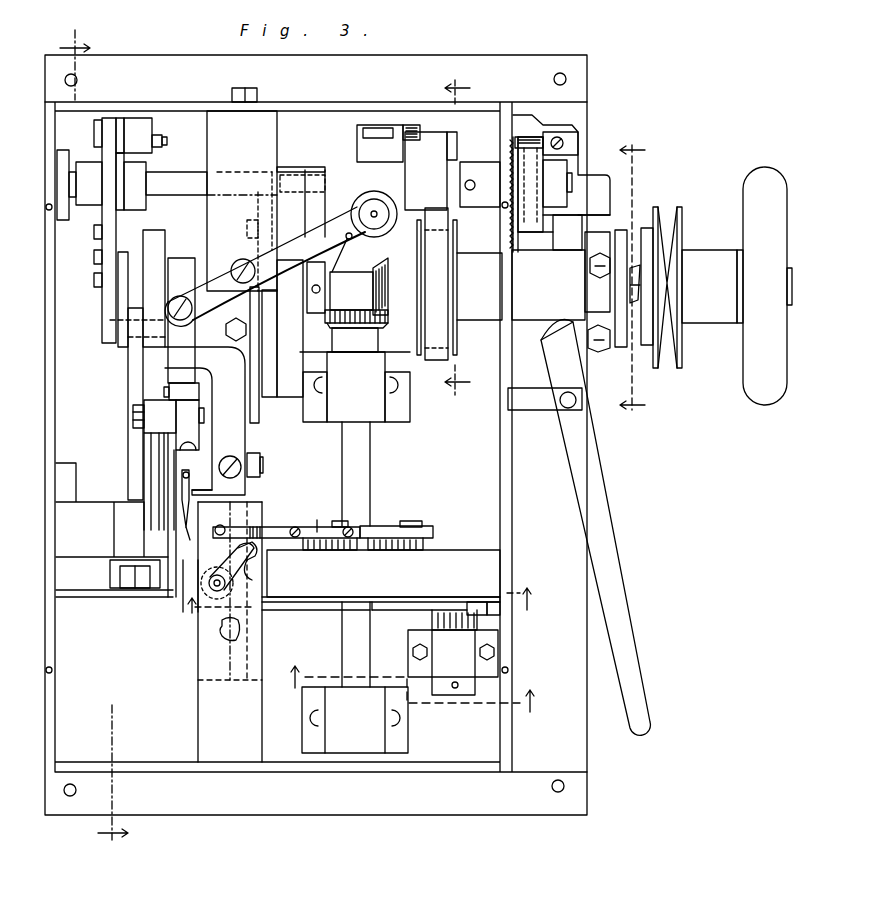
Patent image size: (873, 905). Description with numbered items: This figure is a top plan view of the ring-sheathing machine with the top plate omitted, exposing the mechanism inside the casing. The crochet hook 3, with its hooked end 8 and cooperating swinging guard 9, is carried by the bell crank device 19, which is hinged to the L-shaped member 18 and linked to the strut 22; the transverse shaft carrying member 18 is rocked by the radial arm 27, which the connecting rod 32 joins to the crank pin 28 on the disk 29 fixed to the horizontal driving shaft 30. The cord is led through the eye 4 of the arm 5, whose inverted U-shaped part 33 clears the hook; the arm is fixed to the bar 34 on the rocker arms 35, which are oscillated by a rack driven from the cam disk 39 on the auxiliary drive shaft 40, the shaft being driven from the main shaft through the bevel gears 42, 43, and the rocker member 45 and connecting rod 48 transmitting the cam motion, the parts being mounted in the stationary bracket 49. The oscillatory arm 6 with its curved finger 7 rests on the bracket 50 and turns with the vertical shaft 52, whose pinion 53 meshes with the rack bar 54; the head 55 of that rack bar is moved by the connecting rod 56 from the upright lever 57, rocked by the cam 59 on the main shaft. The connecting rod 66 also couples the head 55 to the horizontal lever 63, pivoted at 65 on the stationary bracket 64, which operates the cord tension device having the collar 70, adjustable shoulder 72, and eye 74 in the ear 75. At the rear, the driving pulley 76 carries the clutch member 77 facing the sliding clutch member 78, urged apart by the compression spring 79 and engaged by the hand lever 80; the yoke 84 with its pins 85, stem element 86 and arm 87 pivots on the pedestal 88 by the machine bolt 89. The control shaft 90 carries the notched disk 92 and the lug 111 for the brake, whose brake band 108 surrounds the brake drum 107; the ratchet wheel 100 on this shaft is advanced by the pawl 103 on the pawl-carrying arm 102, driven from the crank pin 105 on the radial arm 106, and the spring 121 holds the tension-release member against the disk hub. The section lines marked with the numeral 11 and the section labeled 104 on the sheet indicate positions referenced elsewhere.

The crochet hook 3 is at (182, 462).
The eye 4 is at (218, 528).
The arm 5 is at (286, 519).
The oscillatory arm 6 is at (253, 565).
The curved finger 7 is at (272, 557).
The hooked end 8 is at (188, 522).
The swinging guard 9 is at (188, 490).
The section line 11- 11 is at (457, 236).
The L-shaped member 18 is at (154, 474).
The bell crank device 19 is at (168, 416).
The strut 22 is at (178, 590).
The radial arm 27 is at (122, 588).
The crank pin 28 is at (120, 342).
The disk 29 is at (148, 285).
The driving shaft 30 is at (351, 291).
The connecting rod 32 is at (137, 383).
The inverted U-shaped part 33 is at (258, 528).
The bar 34 is at (385, 525).
The rocker arms 35 is at (381, 551).
The cam disk 39 is at (328, 612).
The auxiliary drive shaft 40 is at (367, 463).
The bevel gear 42 is at (348, 323).
The bevel gear 43 is at (393, 276).
The rocker member 45 is at (456, 632).
The connecting rod 48 is at (410, 607).
The stationary bracket 49 is at (383, 573).
The bracket 50 is at (205, 658).
The vertical shaft 52 is at (214, 592).
The pinion 53 is at (227, 570).
The rack bar 54 is at (243, 494).
The head 55 is at (247, 477).
The connecting rod 56 is at (307, 425).
The upright lever 57 is at (270, 315).
The cam 59 is at (290, 328).
The horizontal lever 63 is at (265, 266).
The stationary bracket 64 is at (242, 201).
The pivotal connection 65 is at (243, 266).
The connecting rod 66 is at (205, 406).
The collar 70 is at (366, 200).
The adjustable shoulder 72 is at (376, 208).
The eye 74 is at (315, 241).
The ear 75 is at (349, 240).
The driving pulley 76 is at (672, 232).
The clutch member 77 is at (648, 253).
The sliding clutch member 78 is at (628, 240).
The compression spring 79 is at (640, 275).
The hand lever 80 is at (612, 515).
The yoke 84 is at (592, 289).
The pins 85 is at (605, 350).
The stem element 86 is at (600, 228).
The arm 87 is at (566, 252).
The pedestal 88 is at (613, 160).
The machine bolt 89 is at (598, 258).
The control shaft 90 is at (172, 175).
The disk 92 is at (537, 185).
The ratchet wheel 100 is at (108, 153).
The pawl-carrying arm 102 is at (125, 187).
The pawl 103 is at (104, 230).
The lug 104 is at (98, 253).
The crank pin 105 is at (104, 275).
The radial arm 106 is at (123, 318).
The brake drum 107 is at (458, 291).
The brake band 108 is at (438, 284).
The lug 111 is at (405, 152).
The spring 121 is at (512, 160).